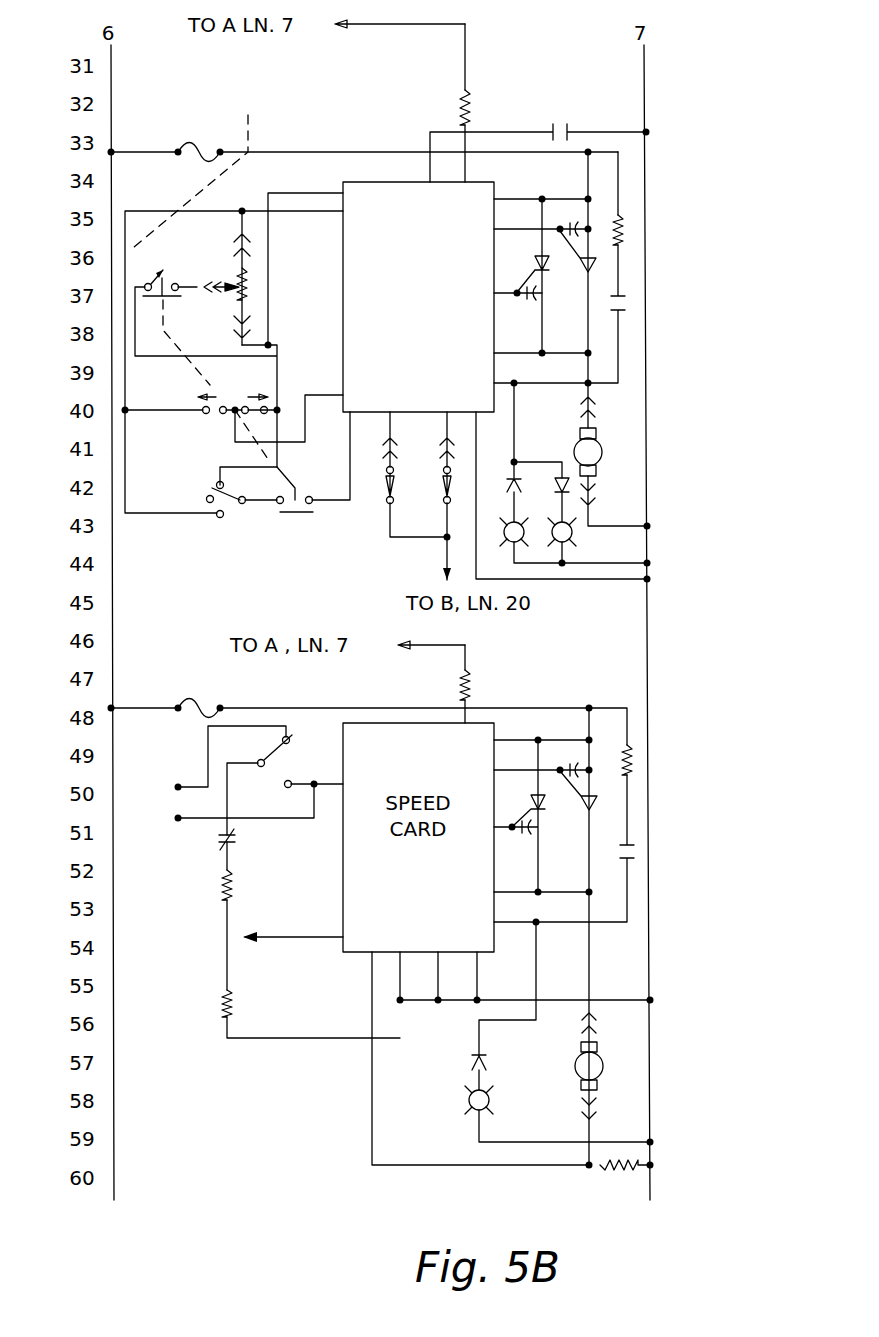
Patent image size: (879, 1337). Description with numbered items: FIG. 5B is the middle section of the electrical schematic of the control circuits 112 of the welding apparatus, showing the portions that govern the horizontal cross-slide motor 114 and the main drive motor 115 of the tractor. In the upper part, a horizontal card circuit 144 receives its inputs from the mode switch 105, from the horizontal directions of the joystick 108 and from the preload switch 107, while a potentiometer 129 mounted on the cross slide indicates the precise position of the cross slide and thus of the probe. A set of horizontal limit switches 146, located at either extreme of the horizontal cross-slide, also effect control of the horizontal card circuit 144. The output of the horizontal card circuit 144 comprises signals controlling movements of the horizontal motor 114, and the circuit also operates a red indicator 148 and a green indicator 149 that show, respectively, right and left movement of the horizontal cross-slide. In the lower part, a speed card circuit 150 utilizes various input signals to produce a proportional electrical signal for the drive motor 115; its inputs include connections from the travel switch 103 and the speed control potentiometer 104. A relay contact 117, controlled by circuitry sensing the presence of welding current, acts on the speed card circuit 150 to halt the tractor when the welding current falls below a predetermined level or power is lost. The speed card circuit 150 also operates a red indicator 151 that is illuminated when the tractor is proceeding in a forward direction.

The horizontal card circuit 144 is at (390, 200).
The potentiometer 129 is at (255, 304).
The mode switch 105 is at (142, 288).
The joystick 108 is at (212, 417).
The preload switch 107 is at (232, 517).
The horizontal limit switches 146 is at (398, 486).
The red indicator 148 is at (520, 541).
The green indicator 149 is at (573, 536).
The horizontal cross-slide motor 114 is at (602, 456).
The circuits 112 is at (660, 338).
The speed card circuit 150 is at (478, 740).
The travel switch 103 is at (280, 772).
The relay contact 117 is at (225, 843).
The speed control potentiometer 104 is at (235, 938).
The red indicator 151 is at (466, 1100).
The main drive motor 115 is at (578, 1082).